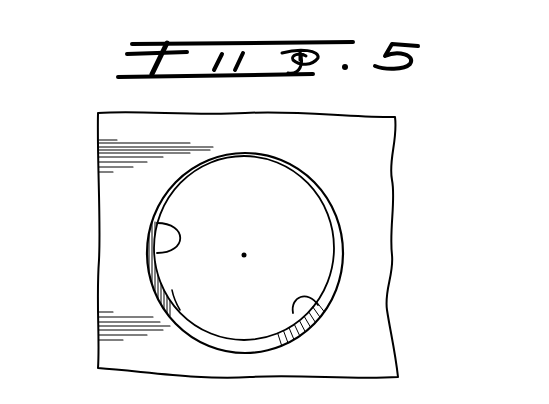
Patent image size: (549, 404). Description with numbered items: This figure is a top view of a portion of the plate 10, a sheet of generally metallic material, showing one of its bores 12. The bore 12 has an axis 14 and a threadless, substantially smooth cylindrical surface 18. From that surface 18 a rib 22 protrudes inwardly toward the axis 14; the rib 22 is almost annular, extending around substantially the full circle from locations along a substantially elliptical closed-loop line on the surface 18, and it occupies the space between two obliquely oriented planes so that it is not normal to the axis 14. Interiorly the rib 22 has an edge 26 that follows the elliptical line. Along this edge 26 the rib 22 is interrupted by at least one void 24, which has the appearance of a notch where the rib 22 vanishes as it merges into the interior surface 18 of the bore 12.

The plate 10 is at (388, 207).
The bore 12 is at (288, 267).
The axis 14 is at (247, 252).
The cylindrical surface 18 is at (177, 250).
The rib 22 is at (333, 295).
The void 24 is at (244, 155).
The edge 26 is at (178, 306).